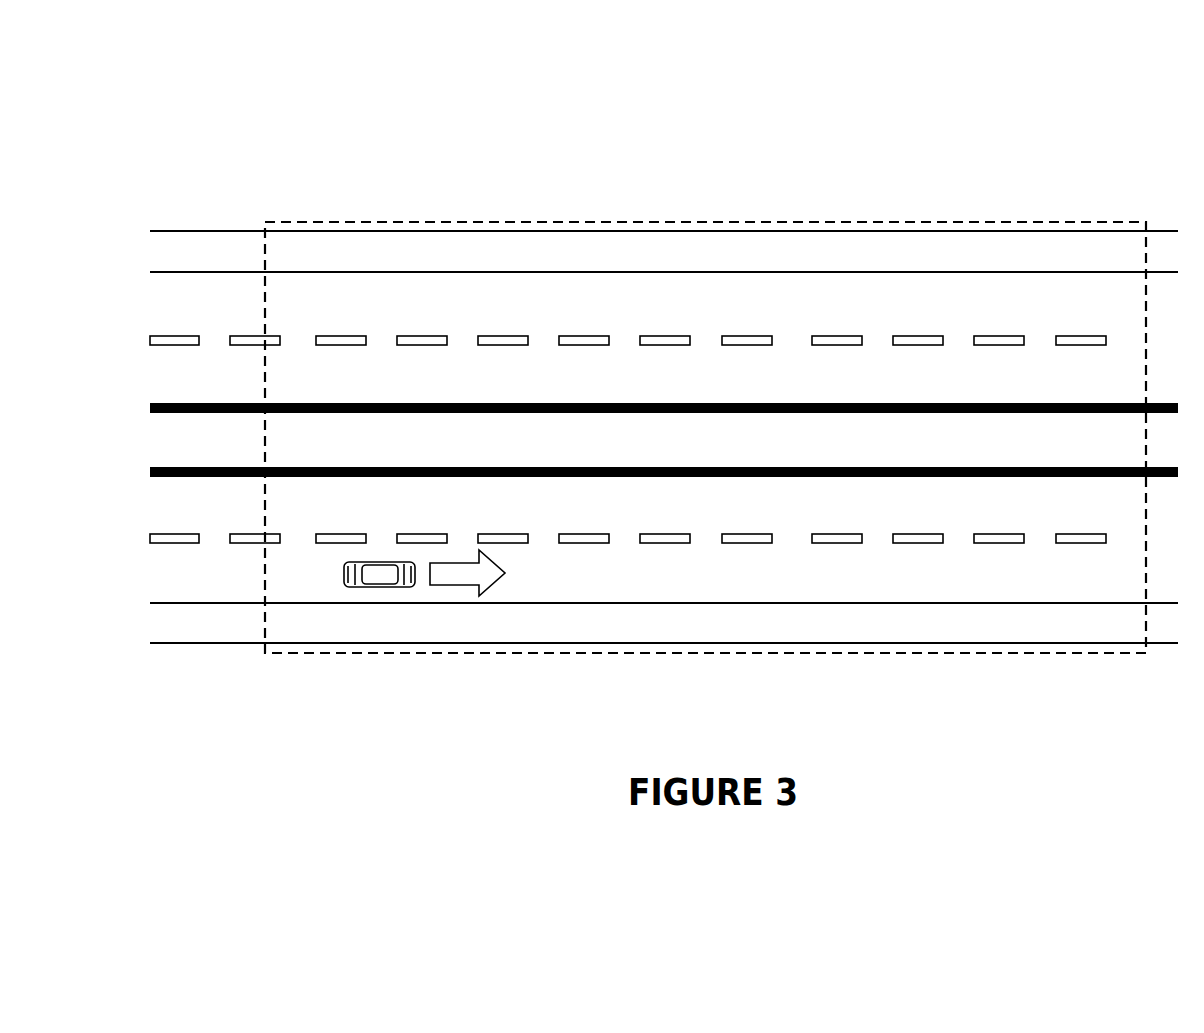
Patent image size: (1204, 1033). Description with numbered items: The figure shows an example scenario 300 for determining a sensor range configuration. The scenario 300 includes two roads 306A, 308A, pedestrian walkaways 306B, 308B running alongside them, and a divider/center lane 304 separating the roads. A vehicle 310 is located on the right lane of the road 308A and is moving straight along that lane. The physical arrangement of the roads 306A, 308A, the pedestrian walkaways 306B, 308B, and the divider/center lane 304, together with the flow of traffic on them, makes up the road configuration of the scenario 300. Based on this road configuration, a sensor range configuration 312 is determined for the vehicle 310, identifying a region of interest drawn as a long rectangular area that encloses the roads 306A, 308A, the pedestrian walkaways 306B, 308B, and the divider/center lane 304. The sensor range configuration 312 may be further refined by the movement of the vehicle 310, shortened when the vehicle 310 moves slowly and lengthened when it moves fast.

The scenario 300 is at (1000, 100).
The divider/center lane 304 is at (215, 451).
The road 306A is at (233, 321).
The pedestrian walkaway 306B is at (233, 263).
The road 308A is at (225, 518).
The pedestrian walkaway 308B is at (227, 635).
The vehicle 310 is at (378, 572).
The sensor range configuration 312 is at (613, 222).